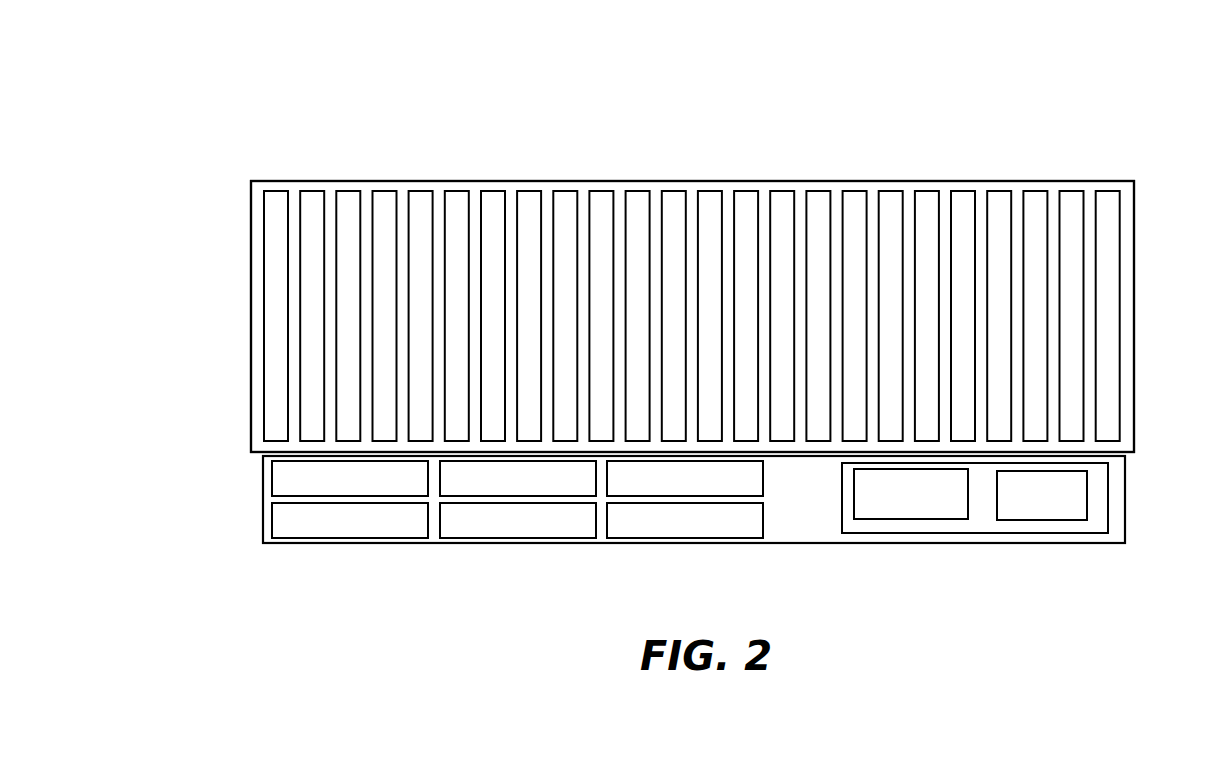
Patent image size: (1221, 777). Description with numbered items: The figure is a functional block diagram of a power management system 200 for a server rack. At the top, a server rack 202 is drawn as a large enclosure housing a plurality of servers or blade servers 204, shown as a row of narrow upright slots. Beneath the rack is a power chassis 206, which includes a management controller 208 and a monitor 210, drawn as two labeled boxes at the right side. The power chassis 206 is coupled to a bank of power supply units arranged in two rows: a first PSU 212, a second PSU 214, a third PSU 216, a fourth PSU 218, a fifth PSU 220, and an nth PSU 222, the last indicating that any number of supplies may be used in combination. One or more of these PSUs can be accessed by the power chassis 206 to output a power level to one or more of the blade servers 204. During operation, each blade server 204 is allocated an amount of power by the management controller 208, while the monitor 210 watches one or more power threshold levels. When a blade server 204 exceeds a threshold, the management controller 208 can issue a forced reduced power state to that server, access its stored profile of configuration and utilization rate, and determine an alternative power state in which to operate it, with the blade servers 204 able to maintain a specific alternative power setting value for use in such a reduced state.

The power management system 200 is at (246, 142).
The server rack 202 is at (1135, 192).
The blade servers 204 is at (347, 204).
The power chassis 206 is at (1109, 492).
The management controller 208 is at (1047, 515).
The monitor 210 is at (913, 510).
The first power supply unit 212 is at (292, 480).
The second power supply unit 214 is at (283, 524).
The third power supply unit 216 is at (453, 485).
The fourth power supply unit 218 is at (567, 528).
The fifth power supply unit 220 is at (738, 473).
The nth power supply unit 222 is at (683, 533).